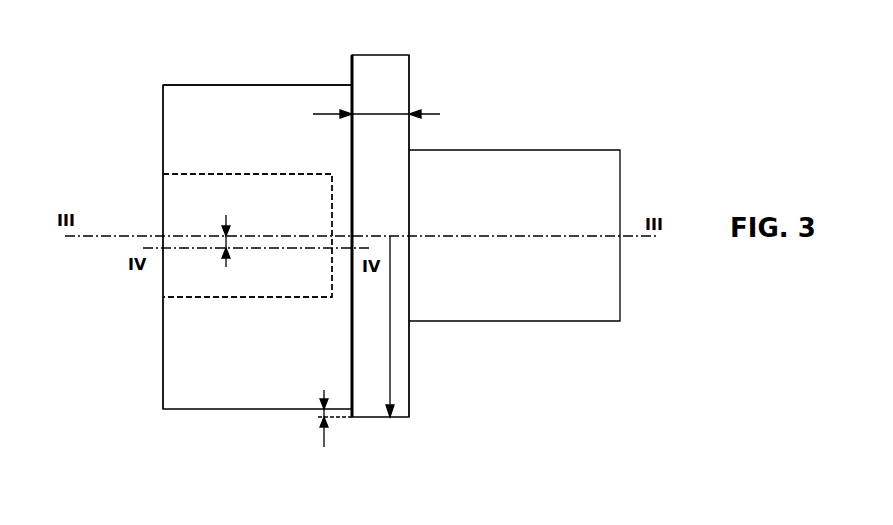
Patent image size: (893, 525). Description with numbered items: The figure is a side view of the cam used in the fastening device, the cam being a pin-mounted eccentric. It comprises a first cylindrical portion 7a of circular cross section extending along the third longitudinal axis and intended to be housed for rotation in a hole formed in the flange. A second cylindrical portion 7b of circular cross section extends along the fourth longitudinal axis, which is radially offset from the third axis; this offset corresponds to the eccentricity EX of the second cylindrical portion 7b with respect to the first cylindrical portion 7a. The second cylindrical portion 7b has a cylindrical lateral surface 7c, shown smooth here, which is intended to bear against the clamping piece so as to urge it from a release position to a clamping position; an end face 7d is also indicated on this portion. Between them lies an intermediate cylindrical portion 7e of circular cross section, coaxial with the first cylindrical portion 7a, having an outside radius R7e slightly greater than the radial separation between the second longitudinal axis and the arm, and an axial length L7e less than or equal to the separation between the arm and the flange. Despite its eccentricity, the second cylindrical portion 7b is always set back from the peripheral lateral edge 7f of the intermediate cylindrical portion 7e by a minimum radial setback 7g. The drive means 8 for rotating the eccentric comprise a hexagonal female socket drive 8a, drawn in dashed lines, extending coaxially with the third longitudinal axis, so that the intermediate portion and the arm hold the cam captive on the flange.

The first cylindrical portion 7a is at (593, 160).
The second cylindrical portion 7b is at (224, 95).
The lateral surface 7c is at (284, 84).
The end face of body 7d is at (162, 123).
The intermediate cylindrical portion 7e is at (383, 63).
The peripheral lateral edge 7f is at (392, 55).
The minimum radial setback 7g is at (333, 431).
The drive means 8 is at (160, 209).
The female socket drive 8a is at (183, 190).
The eccentricity EX is at (227, 254).
The axial length L7e is at (395, 114).
The outside radius R7e is at (390, 360).